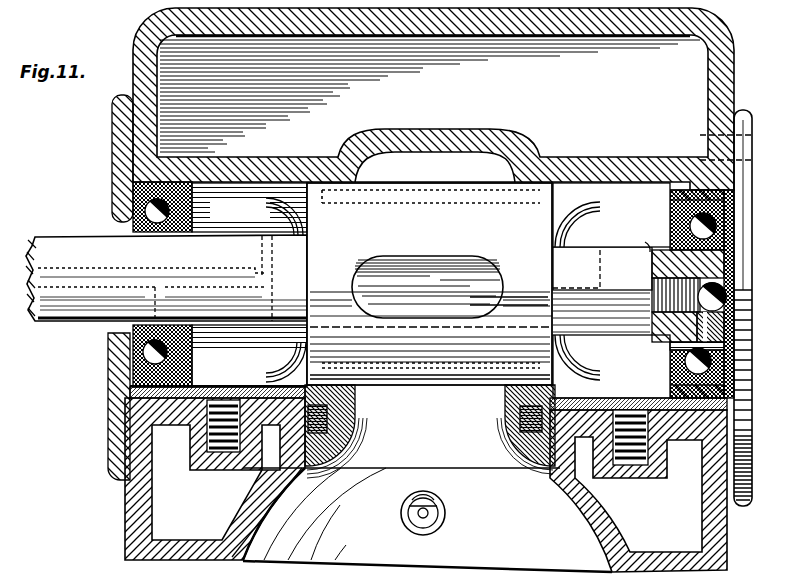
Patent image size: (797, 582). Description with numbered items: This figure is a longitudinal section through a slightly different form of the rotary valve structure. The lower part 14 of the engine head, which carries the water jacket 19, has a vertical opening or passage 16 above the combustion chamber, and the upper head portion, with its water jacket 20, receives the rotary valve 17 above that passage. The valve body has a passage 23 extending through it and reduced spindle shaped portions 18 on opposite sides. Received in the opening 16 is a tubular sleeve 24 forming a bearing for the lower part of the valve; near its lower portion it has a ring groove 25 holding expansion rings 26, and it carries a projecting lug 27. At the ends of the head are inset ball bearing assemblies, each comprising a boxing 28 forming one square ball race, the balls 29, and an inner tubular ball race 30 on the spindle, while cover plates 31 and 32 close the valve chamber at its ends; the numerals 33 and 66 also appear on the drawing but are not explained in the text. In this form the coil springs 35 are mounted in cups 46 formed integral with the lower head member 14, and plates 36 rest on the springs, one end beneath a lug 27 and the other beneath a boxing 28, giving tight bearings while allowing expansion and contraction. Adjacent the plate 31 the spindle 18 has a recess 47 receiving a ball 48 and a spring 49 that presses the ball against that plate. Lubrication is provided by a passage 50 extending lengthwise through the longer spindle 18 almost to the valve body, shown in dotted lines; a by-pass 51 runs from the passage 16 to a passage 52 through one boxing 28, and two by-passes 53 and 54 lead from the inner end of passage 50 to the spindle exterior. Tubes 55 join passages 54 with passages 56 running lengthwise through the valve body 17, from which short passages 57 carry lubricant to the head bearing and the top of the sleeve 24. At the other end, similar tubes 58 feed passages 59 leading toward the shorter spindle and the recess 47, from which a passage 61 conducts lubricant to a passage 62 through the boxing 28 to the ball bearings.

The lower part of the head 14 is at (148, 508).
The vertical opening or passage 16 is at (589, 40).
The rotary valve 17 is at (429, 284).
The reduced spindle shaped portions 18 is at (339, 278).
The water jacket 19 is at (638, 491).
The water jacket 20 is at (430, 94).
The passage 23 is at (470, 278).
The tubular sleeve 24 is at (344, 431).
The ring groove 25 is at (526, 420).
The expansion rings 26 is at (328, 418).
The projecting lug 27 is at (575, 386).
The boxing 28 is at (249, 207).
The balls 29 is at (670, 226).
The inner tubular ball race 30 is at (668, 357).
The cover plate 31 is at (745, 252).
The cover plate 32 is at (115, 172).
The bearing cap 33 is at (110, 343).
The coil springs 35 is at (225, 448).
The plates 36 is at (666, 399).
The cups 46 is at (650, 470).
The recess 47 is at (601, 316).
The ball 48 is at (726, 297).
The spring 49 is at (585, 295).
The passage 50 is at (45, 296).
The by-pass 51 is at (163, 298).
The passage 52 is at (249, 356).
The by-pass 53 is at (268, 258).
The by-pass 54 is at (272, 303).
The tubes 55 is at (275, 203).
The passages 56 is at (402, 205).
The short passages 57 is at (333, 192).
The tubes 58 is at (590, 208).
The passages 59 is at (505, 322).
The passage 61 is at (722, 323).
The passage 62 is at (724, 346).
The lip 66 is at (631, 241).